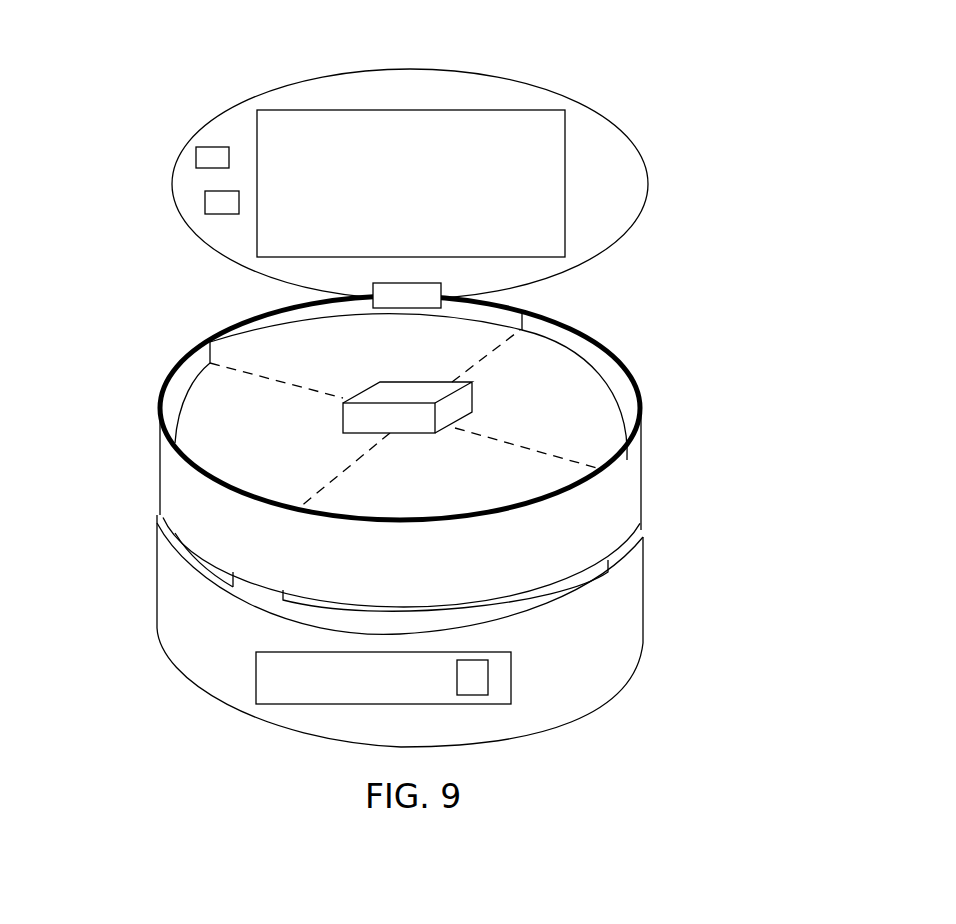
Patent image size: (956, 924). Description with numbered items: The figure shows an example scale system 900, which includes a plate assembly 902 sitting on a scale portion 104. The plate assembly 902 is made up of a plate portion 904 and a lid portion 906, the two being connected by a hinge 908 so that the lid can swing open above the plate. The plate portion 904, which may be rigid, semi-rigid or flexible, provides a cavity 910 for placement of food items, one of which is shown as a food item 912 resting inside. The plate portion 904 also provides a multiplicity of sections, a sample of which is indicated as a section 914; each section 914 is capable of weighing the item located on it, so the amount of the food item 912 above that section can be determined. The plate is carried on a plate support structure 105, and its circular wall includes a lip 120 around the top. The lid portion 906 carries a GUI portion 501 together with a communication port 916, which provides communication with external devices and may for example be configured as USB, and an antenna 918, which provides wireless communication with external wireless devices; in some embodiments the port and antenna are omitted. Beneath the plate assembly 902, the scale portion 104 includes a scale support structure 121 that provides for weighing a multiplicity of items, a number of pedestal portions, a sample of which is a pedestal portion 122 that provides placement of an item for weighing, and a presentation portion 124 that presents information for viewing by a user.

The scale system 900 is at (160, 83).
The lid portion 906 is at (553, 83).
The GUI portion 501 is at (566, 183).
The communication port 916 is at (190, 147).
The antenna 918 is at (197, 202).
The plate assembly 902 is at (695, 238).
The hinge 908 is at (398, 295).
The plate portion 904 is at (585, 325).
The section 914 is at (497, 390).
The plate support structure 105 is at (640, 377).
The cavity 910 is at (580, 408).
The food item 912 is at (339, 417).
The lip 120 is at (627, 453).
The scale portion 104 is at (645, 568).
The pedestal portion 122 is at (578, 588).
The scale support structure 121 is at (552, 727).
The presentation portion 124 is at (335, 678).